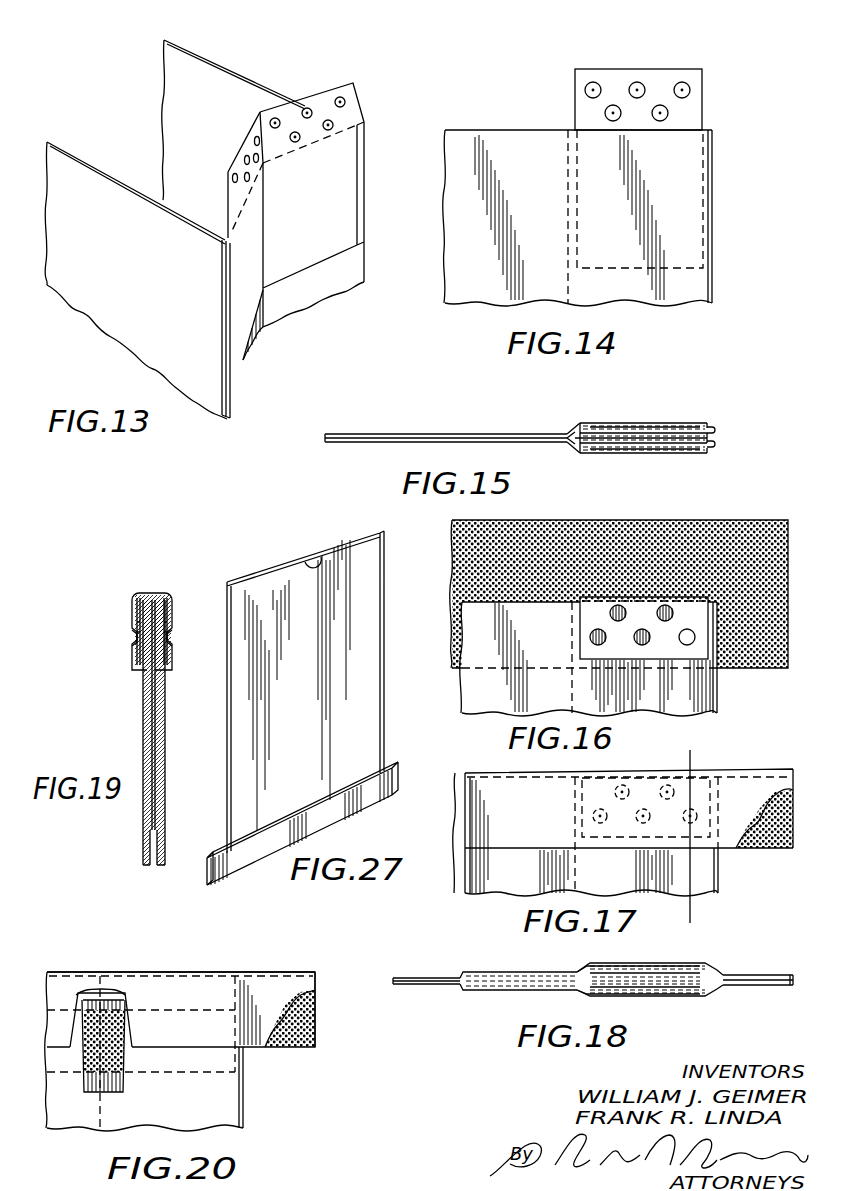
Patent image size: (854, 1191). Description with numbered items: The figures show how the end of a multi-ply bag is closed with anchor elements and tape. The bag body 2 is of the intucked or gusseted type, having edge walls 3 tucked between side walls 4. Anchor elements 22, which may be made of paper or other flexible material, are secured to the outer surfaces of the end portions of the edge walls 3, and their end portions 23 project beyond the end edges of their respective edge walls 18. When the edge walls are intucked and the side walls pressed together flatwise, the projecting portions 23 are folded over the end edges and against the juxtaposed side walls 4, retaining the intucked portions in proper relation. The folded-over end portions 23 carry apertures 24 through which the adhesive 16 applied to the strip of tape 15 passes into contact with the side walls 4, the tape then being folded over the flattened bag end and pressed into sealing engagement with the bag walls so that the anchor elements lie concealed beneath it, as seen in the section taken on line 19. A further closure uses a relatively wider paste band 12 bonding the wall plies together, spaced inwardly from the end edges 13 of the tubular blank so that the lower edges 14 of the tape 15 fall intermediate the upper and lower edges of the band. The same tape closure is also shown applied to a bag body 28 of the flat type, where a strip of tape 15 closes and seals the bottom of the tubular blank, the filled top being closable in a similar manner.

In FIG. 13, the body 2 is at (115, 313).
In FIG. 14, the body 2 is at (485, 290).
In FIG. 16, the body 2 is at (670, 707).
In FIG. 17, the body 2 is at (480, 880).
In FIG. 19, the body 2 is at (145, 860).
In FIG. 20, the body 2 is at (223, 1118).
In FIG. 13, the edge walls 3 is at (305, 280).
In FIG. 13, the side walls 4 is at (216, 58).
In FIG. 14, the side walls 4 is at (481, 130).
In FIG. 15, the side walls 4 is at (418, 434).
In FIG. 16, the side walls 4 is at (473, 623).
In FIG. 17, the side walls 4 is at (455, 776).
In FIG. 18, the side walls 4 is at (417, 976).
In FIG. 19, the side walls 4 is at (140, 684).
In FIG. 20, the side walls 4 is at (46, 972).
In FIG. 20, the paste band 12 is at (95, 1083).
In FIG. 20, the end edges 13 is at (178, 972).
In FIG. 20, the edges of tape 14 is at (213, 1047).
In FIG. 16, the strip of tape 15 is at (720, 518).
In FIG. 17, the strip of tape 15 is at (478, 800).
In FIG. 18, the strip of tape 15 is at (487, 973).
In FIG. 19, the strip of tape 15 is at (147, 594).
In FIG. 27, the strip of tape 15 is at (343, 808).
In FIG. 20, the strip of tape 15 is at (206, 1000).
In FIG. 16, the adhesive 16 is at (766, 545).
In FIG. 17, the adhesive 16 is at (775, 827).
In FIG. 19, the adhesive 16 is at (137, 643).
In FIG. 20, the adhesive 16 is at (298, 1025).
In FIG. 13, the edge walls 18 is at (328, 258).
In FIG. 15, the edge walls 18 is at (612, 432).
In FIG. 18, the edge walls 18 is at (618, 972).
In FIG. 17, the section line 19 is at (806, 745).
In FIG. 18, the section line 19 is at (783, 976).
In FIG. 27, the section line 19 is at (396, 781).
In FIG. 20, the section line 19 is at (316, 972).
In FIG. 13, the anchor elements 22 is at (330, 172).
In FIG. 14, the anchor elements 22 is at (702, 273).
In FIG. 15, the anchor elements 22 is at (716, 436).
In FIG. 19, the anchor elements 22 is at (147, 828).
In FIG. 13, the end portions 23 is at (312, 100).
In FIG. 14, the end portions 23 is at (617, 71).
In FIG. 15, the end portions 23 is at (660, 423).
In FIG. 16, the end portions 23 is at (702, 633).
In FIG. 17, the end portions 23 is at (582, 805).
In FIG. 18, the end portions 23 is at (657, 962).
In FIG. 19, the end portions 23 is at (137, 607).
In FIG. 13, the apertures 24 is at (343, 101).
In FIG. 14, the apertures 24 is at (683, 83).
In FIG. 16, the apertures 24 is at (591, 636).
In FIG. 17, the apertures 24 is at (667, 785).
In FIG. 19, the apertures 24 is at (137, 627).
In FIG. 27, the bag body 28 is at (351, 722).